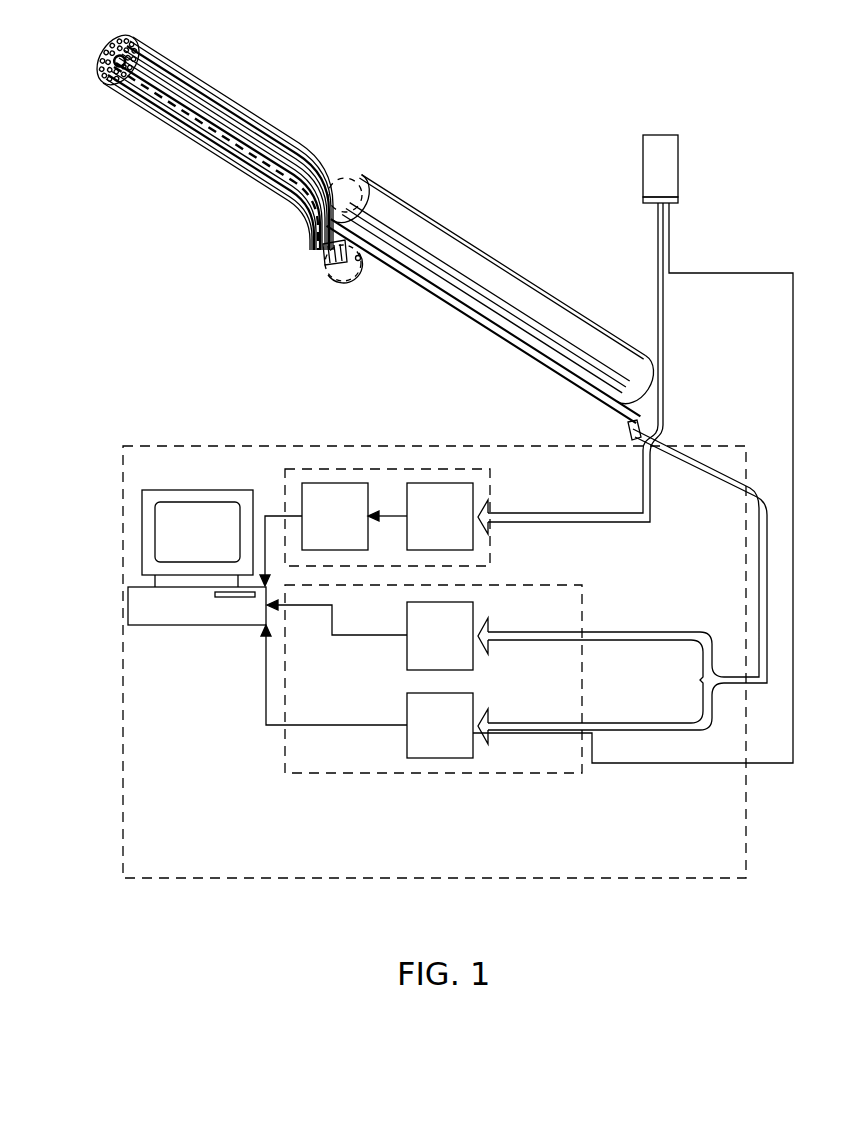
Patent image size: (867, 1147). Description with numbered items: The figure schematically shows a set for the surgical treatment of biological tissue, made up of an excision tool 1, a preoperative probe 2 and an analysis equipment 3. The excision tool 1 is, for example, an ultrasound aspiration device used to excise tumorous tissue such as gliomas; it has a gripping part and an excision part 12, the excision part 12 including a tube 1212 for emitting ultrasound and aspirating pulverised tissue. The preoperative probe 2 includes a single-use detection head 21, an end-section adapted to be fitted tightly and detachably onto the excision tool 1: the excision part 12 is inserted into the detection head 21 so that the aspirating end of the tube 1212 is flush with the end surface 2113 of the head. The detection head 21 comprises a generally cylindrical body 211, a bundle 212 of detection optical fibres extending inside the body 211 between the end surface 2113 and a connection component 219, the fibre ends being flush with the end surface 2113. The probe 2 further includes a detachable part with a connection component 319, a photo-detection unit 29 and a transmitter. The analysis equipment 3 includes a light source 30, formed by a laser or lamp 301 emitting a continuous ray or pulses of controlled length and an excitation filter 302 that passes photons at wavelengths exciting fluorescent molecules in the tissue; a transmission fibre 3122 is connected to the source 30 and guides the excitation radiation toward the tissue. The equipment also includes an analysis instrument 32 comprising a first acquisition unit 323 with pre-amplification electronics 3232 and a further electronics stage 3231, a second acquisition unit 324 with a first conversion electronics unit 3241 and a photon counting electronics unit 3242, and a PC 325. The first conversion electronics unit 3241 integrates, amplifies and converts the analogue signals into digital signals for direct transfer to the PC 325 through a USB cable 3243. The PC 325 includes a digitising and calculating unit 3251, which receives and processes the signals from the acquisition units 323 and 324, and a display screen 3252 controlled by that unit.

The excision tool 1 is at (473, 272).
The preoperative probe 2 is at (200, 142).
The detection head 21 is at (190, 72).
The body 211 is at (337, 167).
The bundle of detection optical fibres 212 is at (237, 160).
The end surface 2113 is at (122, 38).
The excision part 12 is at (160, 83).
The tube 1212 is at (200, 100).
The connection component 219 is at (316, 258).
The connection component 319 is at (345, 278).
The photo-detection unit 29 is at (348, 283).
The analysis equipment 3 is at (418, 440).
The light source 30 is at (665, 177).
The laser or lamp 301 is at (668, 160).
The excitation filter 302 is at (673, 202).
The transmission fibre 3122 is at (660, 320).
The analysis instrument 32 is at (163, 541).
The PC 325 is at (163, 544).
The display screen 3252 is at (182, 532).
The digitising and calculating unit 3251 is at (192, 612).
The first acquisition unit 323 is at (378, 494).
The pre-amplification electronics 3232 is at (320, 495).
The detector 3231 is at (458, 490).
The second acquisition unit 324 is at (421, 706).
The first conversion electronics unit 3241 is at (450, 653).
The photon counting electronics unit 3242 is at (450, 742).
The USB cable 3243 is at (362, 642).